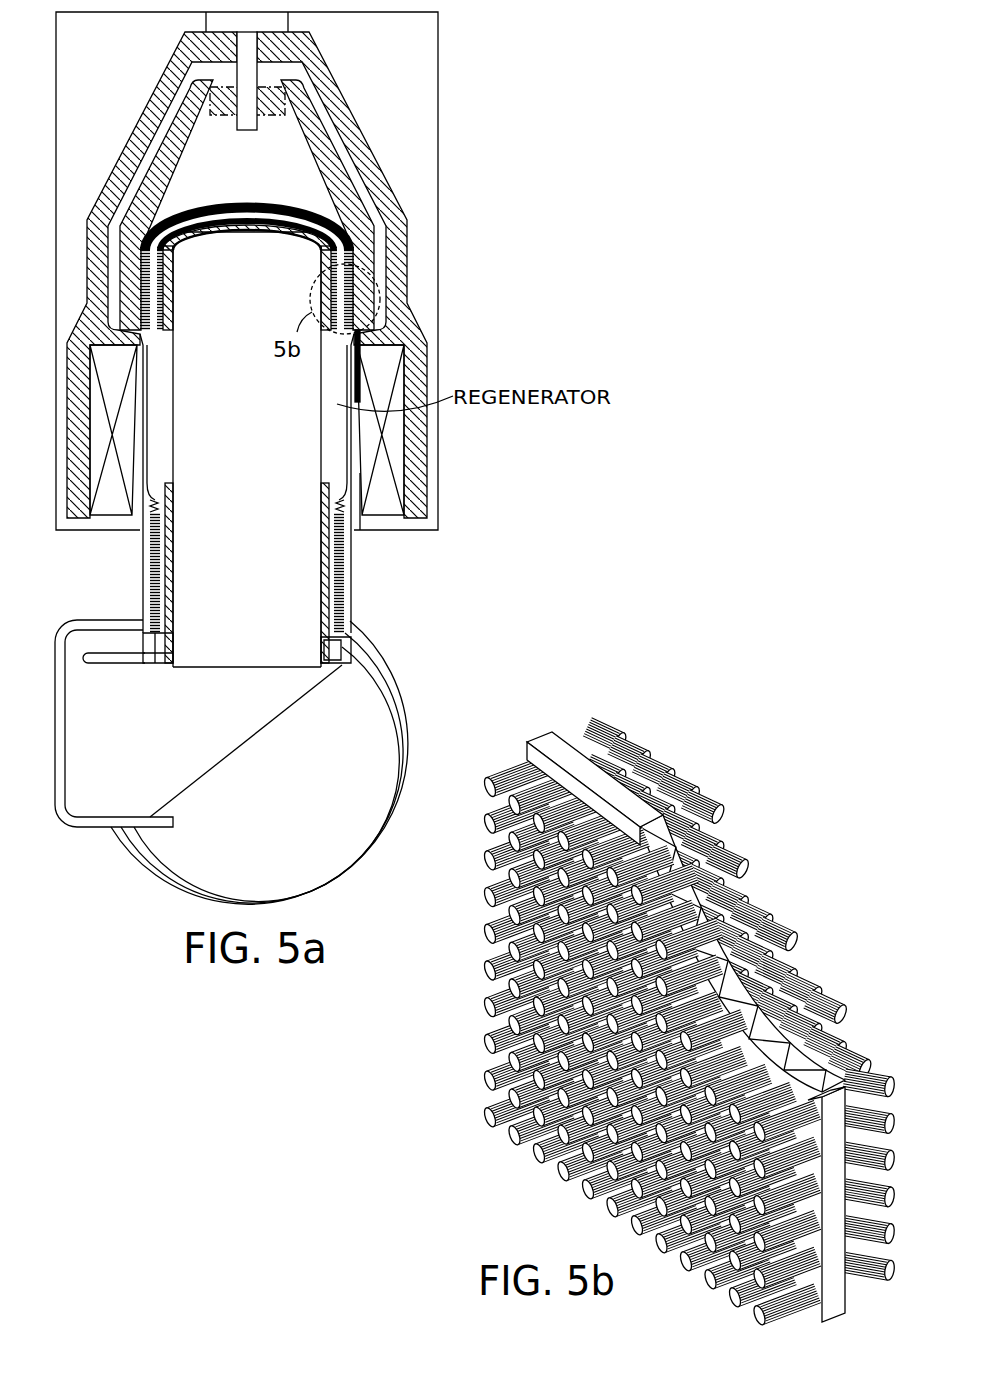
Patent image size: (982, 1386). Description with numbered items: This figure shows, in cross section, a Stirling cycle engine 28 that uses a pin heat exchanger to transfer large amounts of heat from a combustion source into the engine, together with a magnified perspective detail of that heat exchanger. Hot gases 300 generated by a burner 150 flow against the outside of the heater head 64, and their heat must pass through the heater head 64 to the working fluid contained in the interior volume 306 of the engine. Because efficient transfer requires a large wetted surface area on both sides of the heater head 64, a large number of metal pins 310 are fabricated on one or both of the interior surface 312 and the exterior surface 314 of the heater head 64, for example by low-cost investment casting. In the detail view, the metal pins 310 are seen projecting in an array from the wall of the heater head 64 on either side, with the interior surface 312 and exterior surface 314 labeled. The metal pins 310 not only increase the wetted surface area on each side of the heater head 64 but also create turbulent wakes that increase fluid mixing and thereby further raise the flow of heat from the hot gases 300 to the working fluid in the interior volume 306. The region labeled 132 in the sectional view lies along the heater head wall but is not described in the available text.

In FIG. 5a, the hot gases 300 is at (228, 188).
In FIG. 5a, the burner 150 is at (251, 131).
In FIG. 5a, the heater head 64 is at (313, 238).
In FIG. 5b, the heater head 64 is at (837, 1305).
In FIG. 5a, the interior volume 306 is at (267, 328).
In FIG. 5a, the regenerator 132 is at (342, 389).
In FIG. 5a, the Stirling cycle engine 28 is at (88, 892).
In FIG. 5b, the interior surface 312 is at (527, 760).
In FIG. 5b, the exterior surface 314 is at (567, 738).
In FIG. 5b, the metal pins 310 is at (715, 808).